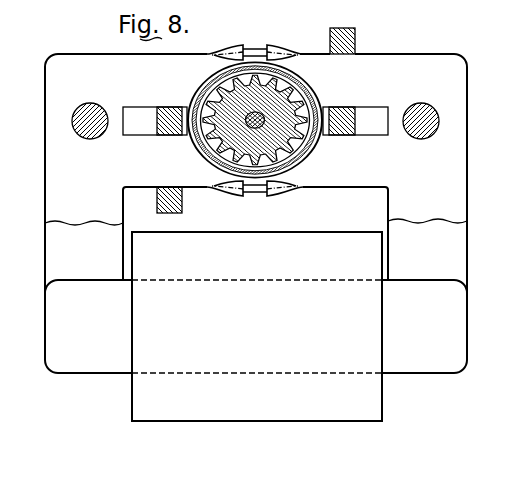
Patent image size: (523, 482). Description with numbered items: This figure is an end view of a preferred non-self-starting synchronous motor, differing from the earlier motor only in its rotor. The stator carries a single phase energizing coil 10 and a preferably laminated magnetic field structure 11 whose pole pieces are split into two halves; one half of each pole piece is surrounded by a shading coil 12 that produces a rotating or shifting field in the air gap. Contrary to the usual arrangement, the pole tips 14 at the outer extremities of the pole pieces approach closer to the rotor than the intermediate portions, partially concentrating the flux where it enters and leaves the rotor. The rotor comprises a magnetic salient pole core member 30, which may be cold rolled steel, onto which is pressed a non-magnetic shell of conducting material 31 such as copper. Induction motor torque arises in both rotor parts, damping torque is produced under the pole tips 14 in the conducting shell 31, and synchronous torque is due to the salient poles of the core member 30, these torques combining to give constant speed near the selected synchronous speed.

The single phase energizing coil 10 is at (134, 396).
The magnetic field structure 11 is at (48, 262).
The shading coil 12 is at (355, 34).
The pole tips 14 is at (273, 47).
The magnetic salient pole core member 30 is at (314, 98).
The non-magnetic shell of conducting material 31 is at (313, 151).